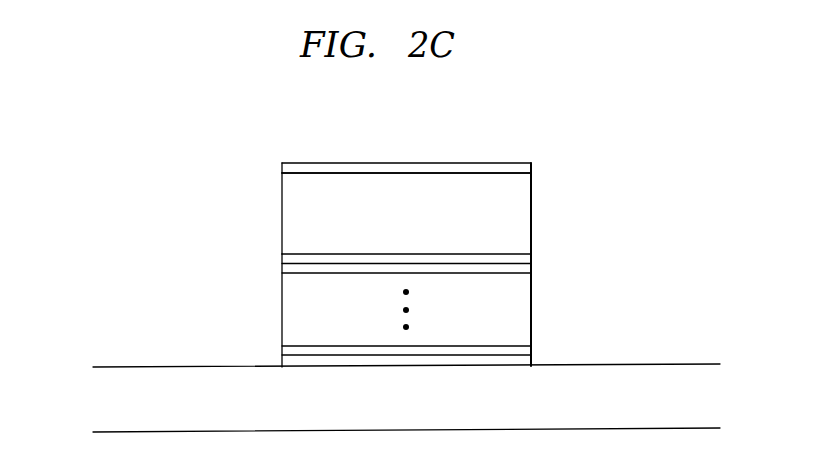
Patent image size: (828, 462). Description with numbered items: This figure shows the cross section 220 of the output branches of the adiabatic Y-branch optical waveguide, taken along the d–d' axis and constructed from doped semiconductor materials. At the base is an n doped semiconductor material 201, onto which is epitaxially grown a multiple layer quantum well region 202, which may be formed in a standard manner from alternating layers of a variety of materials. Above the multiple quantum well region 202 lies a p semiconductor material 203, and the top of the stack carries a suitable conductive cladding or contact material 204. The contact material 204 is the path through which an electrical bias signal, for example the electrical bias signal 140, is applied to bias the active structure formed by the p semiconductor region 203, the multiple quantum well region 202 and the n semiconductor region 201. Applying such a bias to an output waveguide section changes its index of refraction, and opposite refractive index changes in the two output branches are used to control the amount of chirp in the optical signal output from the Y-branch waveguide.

The electrical bias signal 140 is at (405, 163).
The n doped semiconductor material 201 is at (406, 398).
The multiple quantum well region 202 is at (275, 367).
The p semiconductor material 203 is at (300, 211).
The conductive cladding or contact material 204 is at (301, 168).
The cross section of the output branches 220 is at (383, 268).